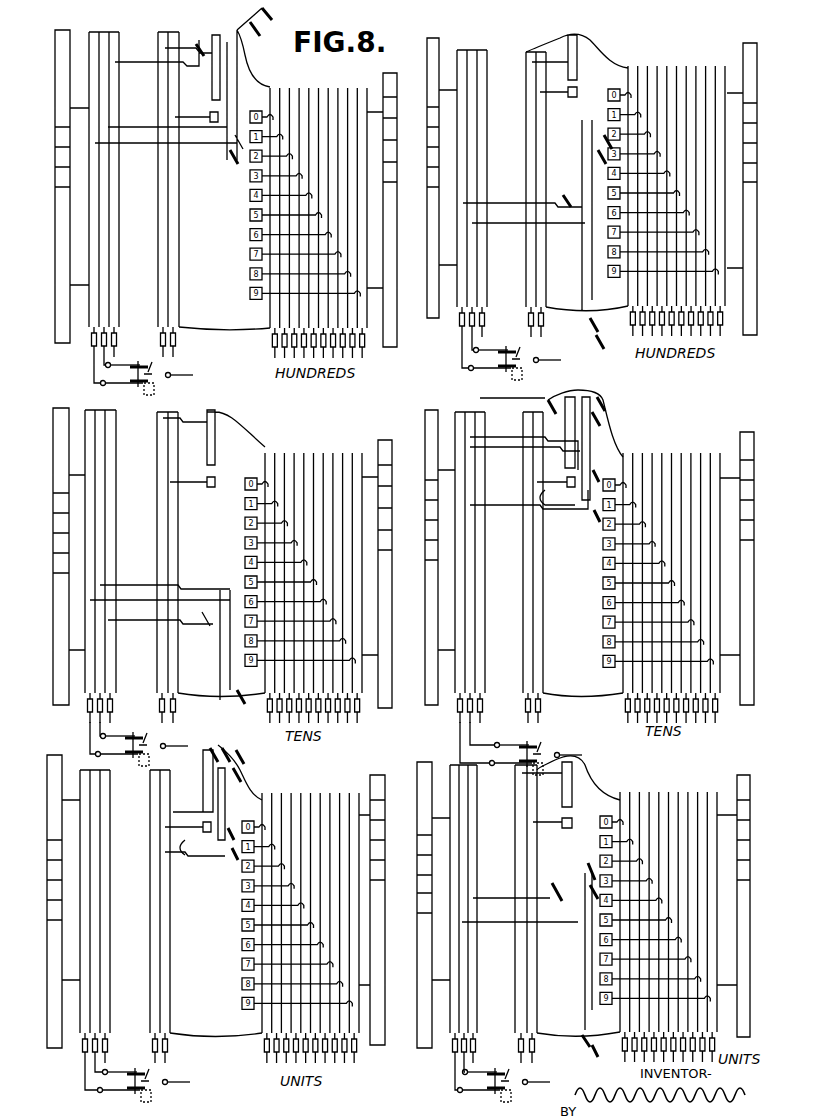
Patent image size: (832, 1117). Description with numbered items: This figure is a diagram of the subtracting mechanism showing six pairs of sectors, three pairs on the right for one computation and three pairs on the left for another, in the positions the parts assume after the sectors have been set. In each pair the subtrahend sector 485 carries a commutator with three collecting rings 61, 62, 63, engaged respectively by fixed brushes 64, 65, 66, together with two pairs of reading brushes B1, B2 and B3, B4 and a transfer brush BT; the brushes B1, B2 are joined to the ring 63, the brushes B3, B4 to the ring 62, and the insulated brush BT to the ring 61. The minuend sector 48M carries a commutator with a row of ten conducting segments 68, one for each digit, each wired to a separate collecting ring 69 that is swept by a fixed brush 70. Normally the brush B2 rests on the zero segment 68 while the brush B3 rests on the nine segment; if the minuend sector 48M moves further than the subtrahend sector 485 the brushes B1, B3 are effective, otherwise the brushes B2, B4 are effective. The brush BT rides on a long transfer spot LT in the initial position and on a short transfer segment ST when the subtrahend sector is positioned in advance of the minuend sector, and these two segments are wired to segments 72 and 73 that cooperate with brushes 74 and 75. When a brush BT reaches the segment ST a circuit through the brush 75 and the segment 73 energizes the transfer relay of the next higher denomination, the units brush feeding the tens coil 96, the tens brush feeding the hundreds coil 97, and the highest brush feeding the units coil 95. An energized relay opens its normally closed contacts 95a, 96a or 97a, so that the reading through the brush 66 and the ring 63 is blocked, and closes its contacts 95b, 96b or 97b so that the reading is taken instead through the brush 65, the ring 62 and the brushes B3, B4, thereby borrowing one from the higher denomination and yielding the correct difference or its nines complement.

The subtrahend sector 485 is at (424, 762).
The minuend sector 48M is at (737, 778).
The collecting ring 61 is at (477, 836).
The collecting ring 62 is at (468, 821).
The collecting ring 63 is at (455, 806).
The brush 64 is at (468, 1054).
The brush 65 is at (457, 1068).
The brush 66 is at (450, 1042).
The conducting segments 68 is at (614, 820).
The collecting rings 69 is at (658, 800).
The fixed brush 70 is at (714, 1050).
The segment 72 is at (168, 1016).
The segment 73 is at (152, 1000).
The brush 74 is at (175, 1060).
The brush 75 is at (168, 1052).
The units transfer relay 95 is at (520, 1100).
The normally closed transfer contacts 95a is at (512, 1080).
The transfer contacts 95b is at (497, 1095).
The tens transfer relay 96 is at (515, 765).
The transfer contacts 96a is at (522, 748).
The transfer contacts 96b is at (560, 755).
The hundreds transfer relay 97 is at (510, 382).
The transfer contacts 97a is at (518, 358).
The transfer contacts 97b is at (525, 372).
The transfer brush BT is at (554, 890).
The short transfer segment ST is at (224, 748).
The reading brush B1 is at (590, 1058).
The reading brush B2 is at (590, 885).
The reading brush B3 is at (580, 1042).
The reading brush B4 is at (590, 865).
The long transfer spot LT is at (377, 677).